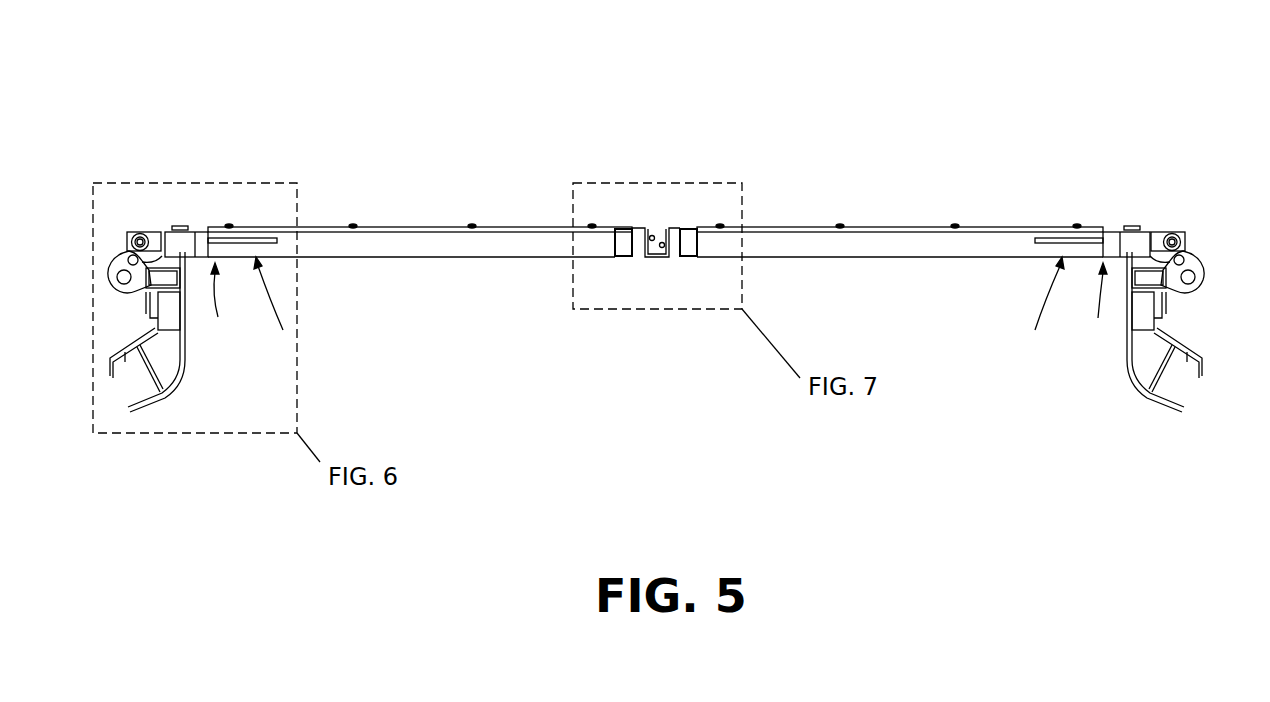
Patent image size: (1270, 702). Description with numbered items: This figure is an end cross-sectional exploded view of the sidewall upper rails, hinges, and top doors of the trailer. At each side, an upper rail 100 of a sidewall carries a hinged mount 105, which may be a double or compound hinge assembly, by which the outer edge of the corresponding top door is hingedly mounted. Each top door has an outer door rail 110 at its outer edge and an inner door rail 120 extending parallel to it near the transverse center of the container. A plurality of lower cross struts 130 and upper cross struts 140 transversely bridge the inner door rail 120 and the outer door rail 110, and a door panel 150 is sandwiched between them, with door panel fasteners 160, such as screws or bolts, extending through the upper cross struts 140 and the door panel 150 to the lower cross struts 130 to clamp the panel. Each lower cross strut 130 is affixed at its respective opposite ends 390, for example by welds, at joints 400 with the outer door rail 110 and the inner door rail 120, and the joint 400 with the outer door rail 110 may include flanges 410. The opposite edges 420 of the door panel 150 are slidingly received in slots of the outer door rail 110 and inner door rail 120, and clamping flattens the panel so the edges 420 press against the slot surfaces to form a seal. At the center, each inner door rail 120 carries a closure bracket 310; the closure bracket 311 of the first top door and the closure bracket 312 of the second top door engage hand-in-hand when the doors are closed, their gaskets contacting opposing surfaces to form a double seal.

The upper rail 100 is at (165, 357).
The hinged mount 105 is at (122, 238).
The outer door rail 110 is at (155, 234).
The inner door rail 120 is at (627, 258).
The lower cross strut 130 is at (410, 244).
The upper cross strut 140 is at (430, 227).
The door panel 150 is at (321, 227).
The door panel fastener 160 is at (230, 226).
The closure bracket 310 is at (660, 343).
The closure bracket of the first top door 311 is at (683, 317).
The closure bracket of the second top door 312 is at (679, 186).
The opposite ends of the lower cross strut 390 is at (659, 314).
The joint 400 is at (661, 312).
The flange 410 is at (277, 242).
The opposite edges of the door panel 420 is at (178, 228).